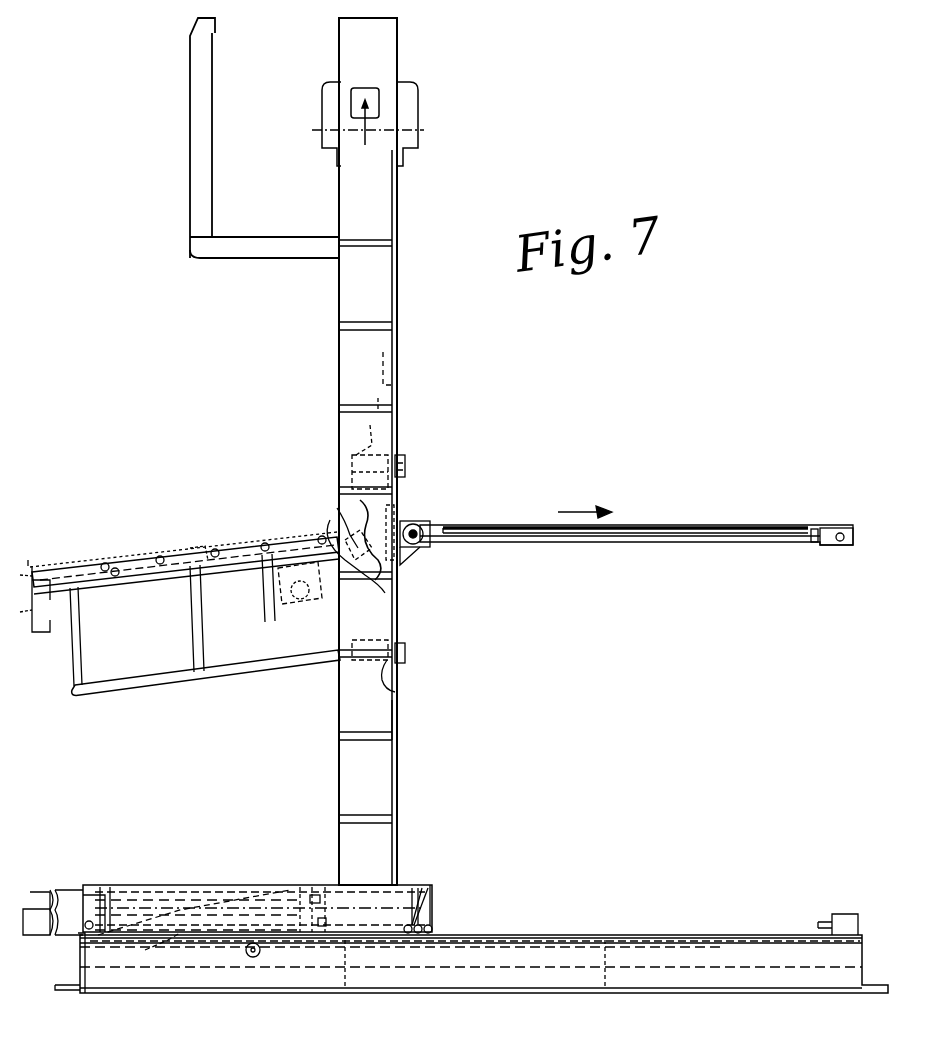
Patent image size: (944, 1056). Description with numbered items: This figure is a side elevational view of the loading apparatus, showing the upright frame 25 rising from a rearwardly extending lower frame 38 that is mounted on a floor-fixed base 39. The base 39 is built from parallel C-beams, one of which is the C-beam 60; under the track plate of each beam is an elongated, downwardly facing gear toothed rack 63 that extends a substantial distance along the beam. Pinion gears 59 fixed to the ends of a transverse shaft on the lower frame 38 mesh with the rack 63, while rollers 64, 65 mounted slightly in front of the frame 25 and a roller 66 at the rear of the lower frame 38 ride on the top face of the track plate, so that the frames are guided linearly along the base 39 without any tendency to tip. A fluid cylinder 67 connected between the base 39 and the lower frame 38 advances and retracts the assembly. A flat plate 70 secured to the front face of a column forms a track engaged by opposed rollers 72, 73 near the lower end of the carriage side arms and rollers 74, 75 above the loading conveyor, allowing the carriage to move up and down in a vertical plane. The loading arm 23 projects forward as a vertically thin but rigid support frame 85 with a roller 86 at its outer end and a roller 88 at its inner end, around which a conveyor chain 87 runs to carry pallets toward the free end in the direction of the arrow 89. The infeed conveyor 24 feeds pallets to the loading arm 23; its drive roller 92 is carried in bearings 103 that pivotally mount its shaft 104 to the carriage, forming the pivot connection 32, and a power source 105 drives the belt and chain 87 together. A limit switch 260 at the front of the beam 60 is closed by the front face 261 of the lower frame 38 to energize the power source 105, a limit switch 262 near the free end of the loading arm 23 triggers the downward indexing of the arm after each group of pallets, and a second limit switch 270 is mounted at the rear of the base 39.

The loading arm 23 is at (636, 538).
The infeed conveyor 24 is at (176, 548).
The frame 25 is at (403, 774).
The pivot connection 32 is at (370, 535).
The lower frame 38 is at (280, 890).
The base 39 is at (757, 930).
The pinion gears 59 is at (260, 955).
The C-beam 60 is at (715, 955).
The gear toothed rack 63 is at (565, 945).
The roller 64 is at (415, 915).
The roller 65 is at (432, 925).
The roller 66 is at (84, 925).
The fluid cylinder 67 is at (38, 935).
The flat plate 70 is at (398, 722).
The roller 72 is at (408, 655).
The roller 73 is at (395, 688).
The roller 74 is at (408, 468).
The roller 75 is at (385, 455).
The support frame 85 is at (672, 540).
The roller 86 is at (838, 546).
The conveyor chain 87 is at (698, 528).
The roller 88 is at (418, 545).
The arrow 89 is at (568, 512).
The drive roller 92 is at (331, 513).
The bearings 103 is at (350, 540).
The shaft 104 is at (395, 590).
The power source 105 is at (305, 605).
The limit switch 260 is at (848, 914).
The front face 261 is at (435, 912).
The limit switch 262 is at (812, 542).
The second limit switch 270 is at (80, 938).